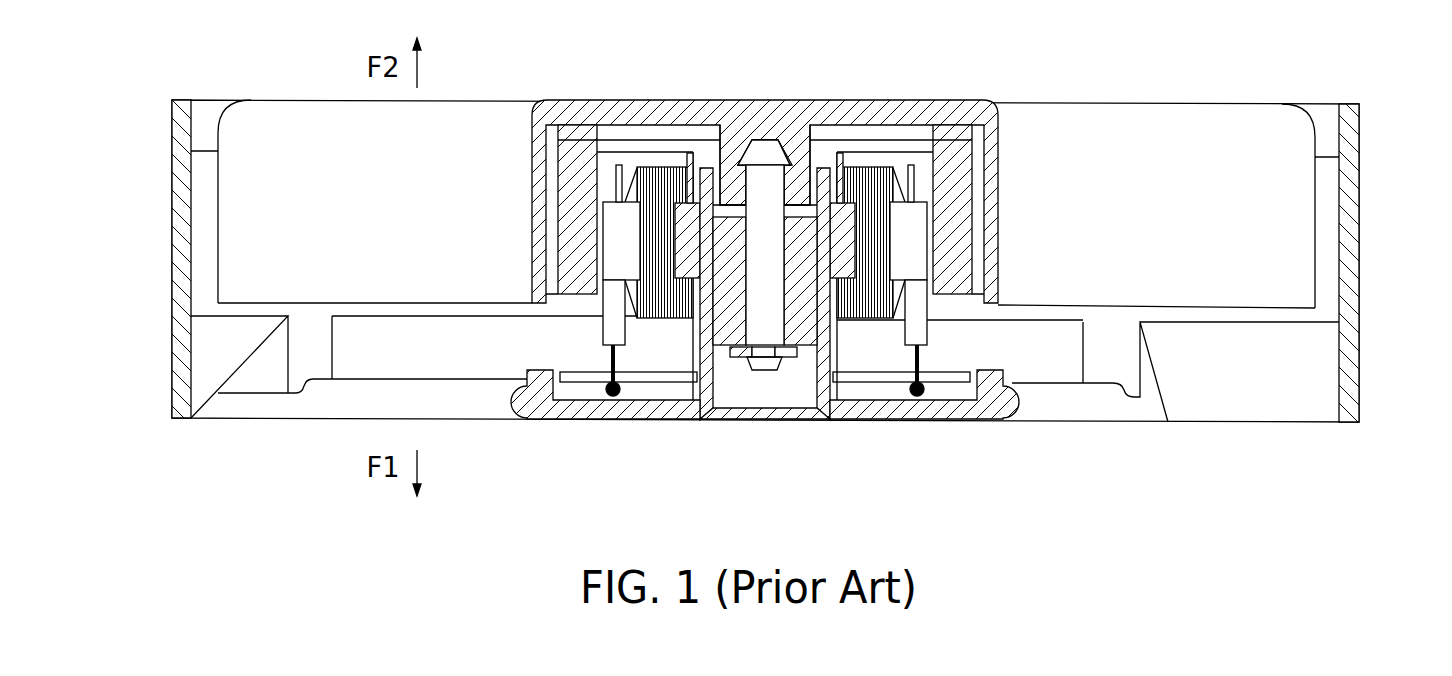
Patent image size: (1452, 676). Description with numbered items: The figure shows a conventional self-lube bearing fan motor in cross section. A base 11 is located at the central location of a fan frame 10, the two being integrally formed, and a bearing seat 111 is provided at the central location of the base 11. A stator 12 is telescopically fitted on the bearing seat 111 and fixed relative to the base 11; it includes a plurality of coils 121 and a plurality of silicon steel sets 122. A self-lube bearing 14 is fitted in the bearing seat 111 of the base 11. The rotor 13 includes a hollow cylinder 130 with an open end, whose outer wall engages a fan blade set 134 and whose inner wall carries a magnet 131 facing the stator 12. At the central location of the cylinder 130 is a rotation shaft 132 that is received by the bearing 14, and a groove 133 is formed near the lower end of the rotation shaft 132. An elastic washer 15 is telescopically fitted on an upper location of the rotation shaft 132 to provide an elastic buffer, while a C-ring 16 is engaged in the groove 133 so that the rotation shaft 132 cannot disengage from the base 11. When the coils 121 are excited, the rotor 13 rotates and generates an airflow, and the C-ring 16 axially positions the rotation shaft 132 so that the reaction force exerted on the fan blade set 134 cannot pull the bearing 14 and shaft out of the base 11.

The fan frame 10 is at (1360, 370).
The base 11 is at (940, 412).
The bearing seat 111 is at (830, 362).
The stator 12 is at (852, 152).
The coils 121 is at (870, 175).
The silicon steel sets 122 is at (916, 210).
The rotor 13 is at (727, 101).
The hollow cylinder 130 is at (532, 143).
The magnet 131 is at (578, 158).
The rotation shaft 132 is at (757, 148).
The groove 133 is at (768, 358).
The fan blade set 134 is at (559, 140).
The bearing 14 is at (795, 190).
The elastic washer 15 is at (723, 190).
The C-ring 16 is at (740, 358).